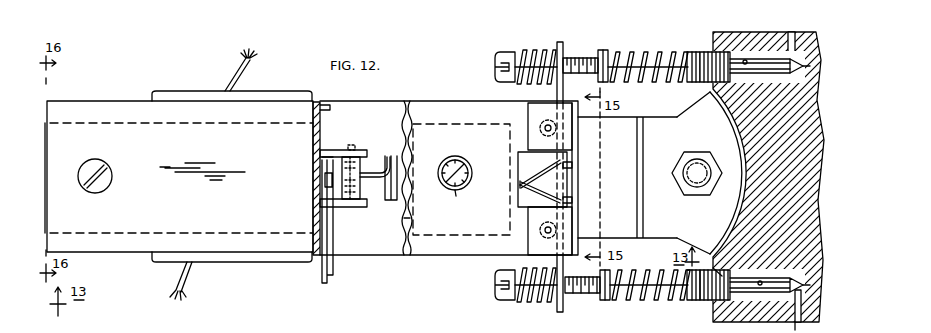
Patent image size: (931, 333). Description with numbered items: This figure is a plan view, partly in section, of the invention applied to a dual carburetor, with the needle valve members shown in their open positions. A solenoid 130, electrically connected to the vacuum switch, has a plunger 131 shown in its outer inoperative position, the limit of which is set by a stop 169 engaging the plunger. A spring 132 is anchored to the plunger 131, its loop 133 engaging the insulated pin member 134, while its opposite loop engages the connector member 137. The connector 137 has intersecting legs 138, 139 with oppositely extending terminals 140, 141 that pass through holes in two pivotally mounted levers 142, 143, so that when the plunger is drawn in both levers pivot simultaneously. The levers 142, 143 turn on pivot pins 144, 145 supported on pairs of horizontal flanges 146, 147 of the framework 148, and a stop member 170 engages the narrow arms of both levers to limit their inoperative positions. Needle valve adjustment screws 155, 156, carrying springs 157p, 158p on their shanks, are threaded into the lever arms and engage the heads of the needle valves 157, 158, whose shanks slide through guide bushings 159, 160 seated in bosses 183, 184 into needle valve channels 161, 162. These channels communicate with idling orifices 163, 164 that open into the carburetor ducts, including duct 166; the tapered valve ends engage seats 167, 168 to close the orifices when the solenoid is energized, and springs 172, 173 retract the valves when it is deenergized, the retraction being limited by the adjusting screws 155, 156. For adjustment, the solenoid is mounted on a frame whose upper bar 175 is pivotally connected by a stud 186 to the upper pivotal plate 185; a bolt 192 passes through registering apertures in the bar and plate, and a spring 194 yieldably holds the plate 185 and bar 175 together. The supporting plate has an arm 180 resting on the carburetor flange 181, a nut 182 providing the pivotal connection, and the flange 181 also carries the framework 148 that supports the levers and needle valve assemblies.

The solenoid 130 is at (203, 89).
The plunger 131 is at (343, 213).
The spring 132 is at (392, 201).
The loop 133 is at (360, 172).
The insulated pin member 134 is at (342, 165).
The connector member 137 is at (524, 173).
The leg 138 is at (520, 190).
The leg 139 is at (520, 181).
The terminal 140 is at (572, 200).
The terminal 141 is at (572, 164).
The lever 142 is at (563, 317).
The lever 143 is at (558, 46).
The pivot pin 144 is at (545, 232).
The pivot pin 145 is at (545, 128).
The horizontal flanges 146 is at (570, 228).
The horizontal flanges 147 is at (570, 127).
The framework 148 is at (462, 94).
The needle valve adjustment screw 155 is at (586, 295).
The needle valve adjustment screw 156 is at (580, 58).
The needle valve 157 is at (641, 300).
The spring 157p is at (530, 300).
The needle valve 158 is at (655, 56).
The spring 158p is at (528, 50).
The guide bushing 159 is at (722, 276).
The guide bushing 160 is at (731, 88).
The needle valve channel 161 is at (760, 301).
The needle valve channel 162 is at (752, 50).
The idling orifice 163 is at (805, 278).
The idling orifice 164 is at (805, 75).
The carburetor duct 166 is at (768, 177).
The seat 167 is at (778, 280).
The seat 168 is at (781, 73).
The stop 169 is at (322, 180).
The stop member 170 is at (572, 178).
The spring 172 is at (606, 301).
The spring 173 is at (630, 52).
The upper bar 175 is at (411, 218).
The arm 180 is at (646, 117).
The flange 181 is at (698, 105).
The nut 182 is at (686, 160).
The boss 183 is at (702, 304).
The boss 184 is at (706, 50).
The upper pivotal plate 185 is at (118, 245).
The stud 186 is at (105, 182).
The bolt 192 is at (457, 154).
The spring 194 is at (456, 196).